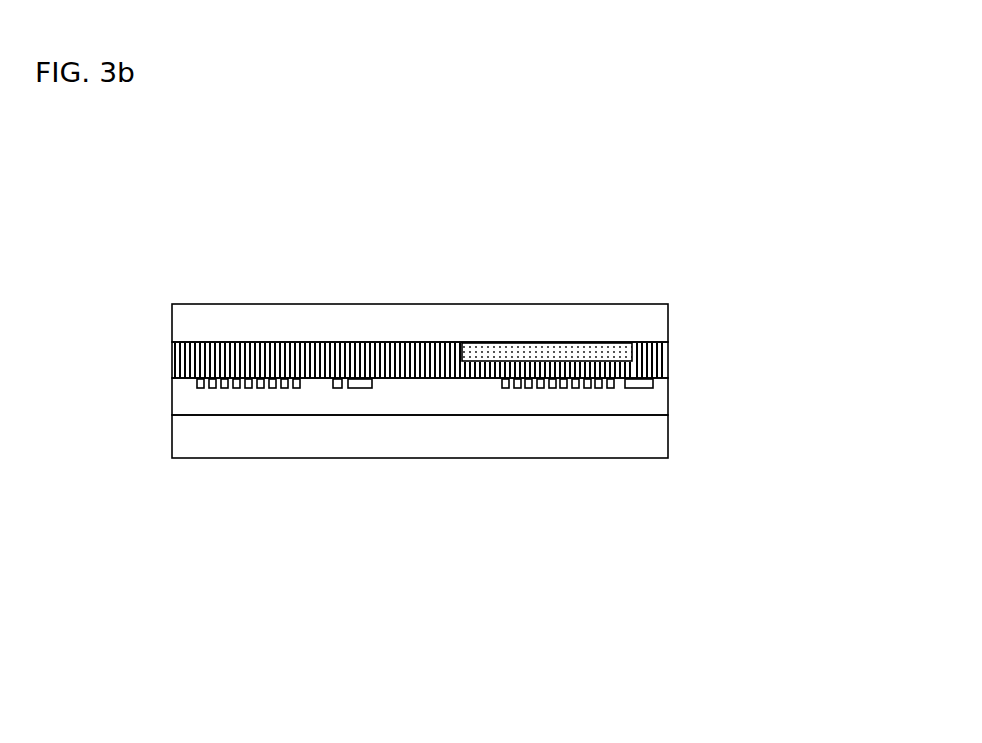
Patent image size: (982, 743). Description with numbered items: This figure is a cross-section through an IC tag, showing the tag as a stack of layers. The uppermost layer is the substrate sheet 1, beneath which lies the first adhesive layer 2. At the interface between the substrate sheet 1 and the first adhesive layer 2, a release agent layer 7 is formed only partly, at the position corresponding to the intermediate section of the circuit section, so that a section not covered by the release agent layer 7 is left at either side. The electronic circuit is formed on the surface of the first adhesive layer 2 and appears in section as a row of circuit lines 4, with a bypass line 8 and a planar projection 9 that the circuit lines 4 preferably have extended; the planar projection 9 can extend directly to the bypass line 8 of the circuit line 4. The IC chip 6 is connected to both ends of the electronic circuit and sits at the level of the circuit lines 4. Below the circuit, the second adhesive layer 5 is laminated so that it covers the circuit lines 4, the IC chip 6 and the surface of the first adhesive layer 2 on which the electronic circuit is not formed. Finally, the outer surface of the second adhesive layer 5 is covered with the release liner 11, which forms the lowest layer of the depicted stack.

The substrate sheet 1 is at (653, 322).
The first adhesive layer 2 is at (668, 362).
The circuit line 4 is at (202, 388).
The second adhesive layer 5 is at (653, 398).
The IC chip 6 is at (632, 388).
The release agent layer 7 is at (482, 357).
The bypass line 8 is at (336, 388).
The planar projection 9 is at (358, 388).
The release liner 11 is at (660, 435).